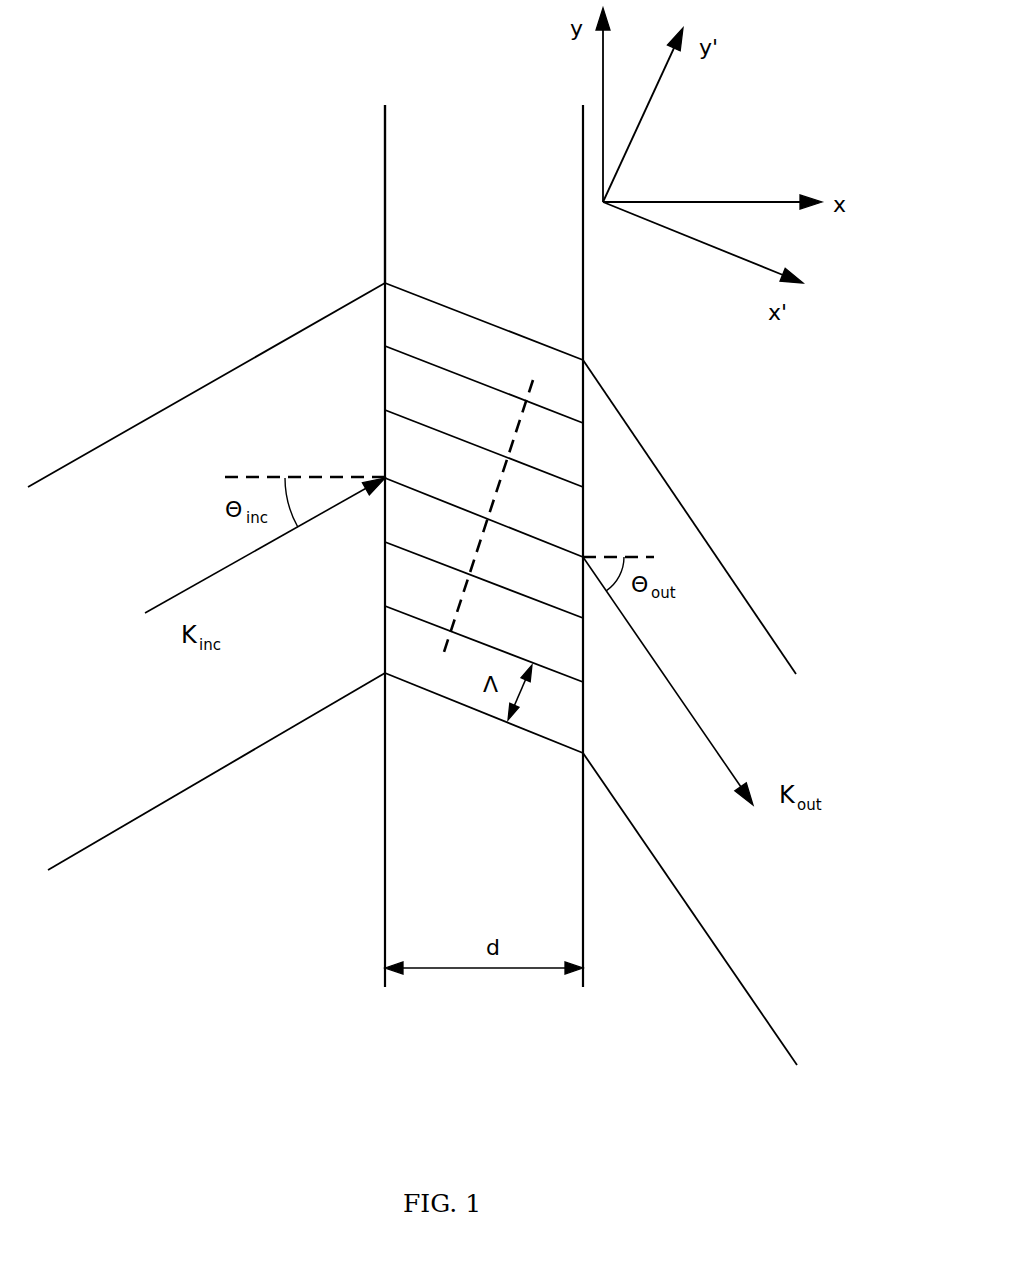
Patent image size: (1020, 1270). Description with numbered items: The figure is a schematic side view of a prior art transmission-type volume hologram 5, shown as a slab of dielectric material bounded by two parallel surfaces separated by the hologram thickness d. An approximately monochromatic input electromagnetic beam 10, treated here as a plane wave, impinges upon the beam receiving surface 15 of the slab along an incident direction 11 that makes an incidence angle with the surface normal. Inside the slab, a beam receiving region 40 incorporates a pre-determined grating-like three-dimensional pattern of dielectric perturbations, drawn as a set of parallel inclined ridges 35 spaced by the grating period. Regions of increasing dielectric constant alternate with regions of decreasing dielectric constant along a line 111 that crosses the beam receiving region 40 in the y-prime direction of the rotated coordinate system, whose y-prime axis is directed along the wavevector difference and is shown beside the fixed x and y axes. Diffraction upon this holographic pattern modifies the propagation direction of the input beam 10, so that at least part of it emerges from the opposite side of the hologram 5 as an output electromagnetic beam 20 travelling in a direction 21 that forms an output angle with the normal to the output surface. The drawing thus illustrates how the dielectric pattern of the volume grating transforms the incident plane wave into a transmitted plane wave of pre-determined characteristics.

The volume hologram 5 is at (407, 880).
The input electromagnetic beam 10 is at (95, 812).
The incident beam K_inc 11 is at (283, 537).
The beam receiving surface 15 is at (385, 188).
The output electromagnetic beam 20 is at (653, 499).
The direction of the output beam 21 is at (675, 682).
The ridges 35 is at (462, 377).
The beam receiving region 40 is at (523, 362).
The line 111 is at (495, 497).